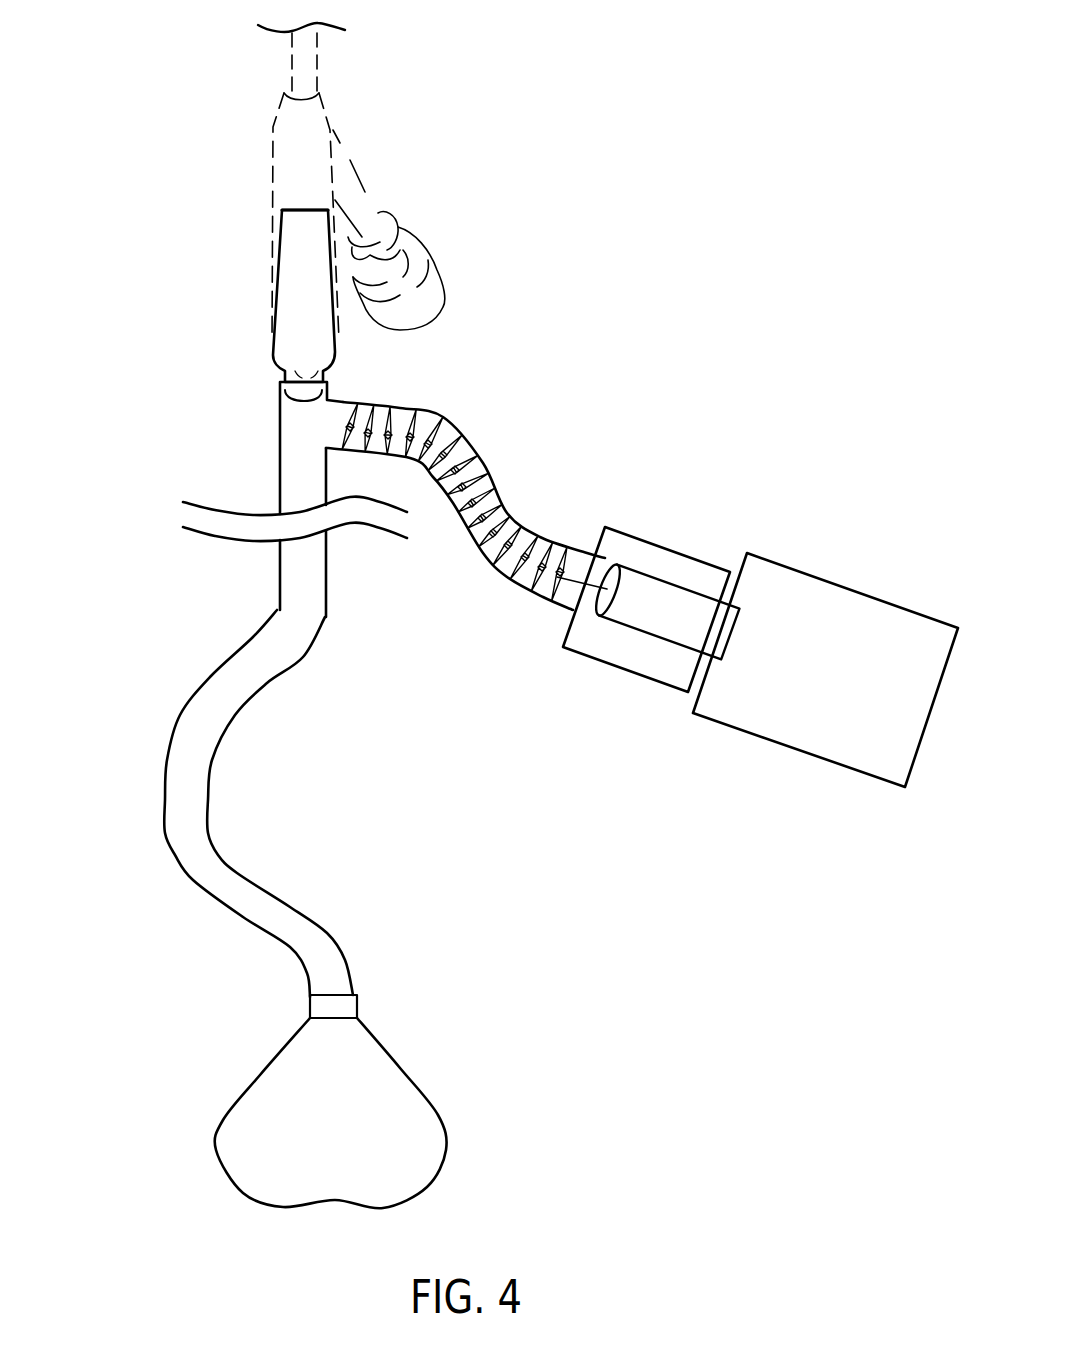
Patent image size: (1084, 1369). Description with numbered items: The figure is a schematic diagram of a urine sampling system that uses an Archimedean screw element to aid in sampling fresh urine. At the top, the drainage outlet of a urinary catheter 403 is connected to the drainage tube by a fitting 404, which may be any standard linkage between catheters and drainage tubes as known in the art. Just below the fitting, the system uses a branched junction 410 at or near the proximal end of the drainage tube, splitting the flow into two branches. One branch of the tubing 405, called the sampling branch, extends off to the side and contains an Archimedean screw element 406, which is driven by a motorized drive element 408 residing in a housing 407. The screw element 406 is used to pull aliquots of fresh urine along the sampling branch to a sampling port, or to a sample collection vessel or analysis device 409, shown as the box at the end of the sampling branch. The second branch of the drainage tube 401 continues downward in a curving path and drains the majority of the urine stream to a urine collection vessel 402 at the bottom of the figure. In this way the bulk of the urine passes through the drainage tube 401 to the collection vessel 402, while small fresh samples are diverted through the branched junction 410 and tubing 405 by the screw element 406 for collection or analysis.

The drainage tube 401 is at (200, 683).
The urine collection vessel 402 is at (417, 1080).
The urinary catheter 403 is at (273, 243).
The fitting 404 is at (307, 362).
The tubing 405 is at (440, 417).
The Archimedean screw element 406 is at (510, 517).
The housing 407 is at (623, 670).
The motorized drive element 408 is at (598, 605).
The sample collection vessel or analysis device 409 is at (827, 760).
The branched junction 410 is at (310, 423).